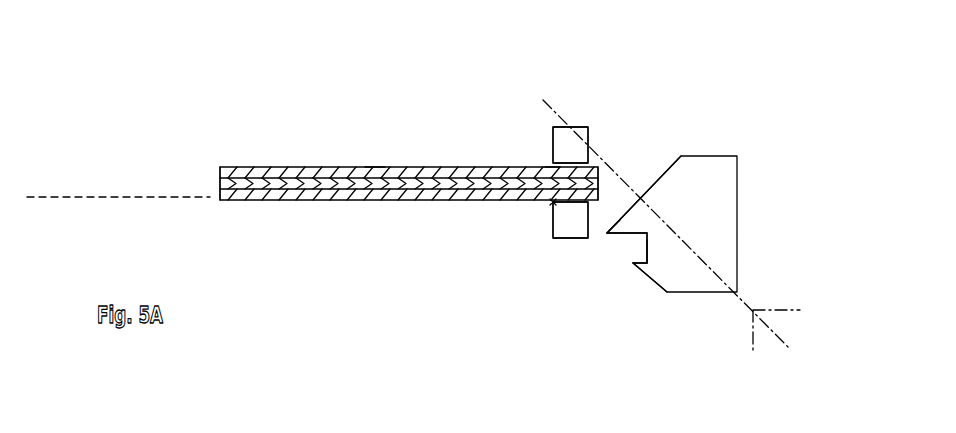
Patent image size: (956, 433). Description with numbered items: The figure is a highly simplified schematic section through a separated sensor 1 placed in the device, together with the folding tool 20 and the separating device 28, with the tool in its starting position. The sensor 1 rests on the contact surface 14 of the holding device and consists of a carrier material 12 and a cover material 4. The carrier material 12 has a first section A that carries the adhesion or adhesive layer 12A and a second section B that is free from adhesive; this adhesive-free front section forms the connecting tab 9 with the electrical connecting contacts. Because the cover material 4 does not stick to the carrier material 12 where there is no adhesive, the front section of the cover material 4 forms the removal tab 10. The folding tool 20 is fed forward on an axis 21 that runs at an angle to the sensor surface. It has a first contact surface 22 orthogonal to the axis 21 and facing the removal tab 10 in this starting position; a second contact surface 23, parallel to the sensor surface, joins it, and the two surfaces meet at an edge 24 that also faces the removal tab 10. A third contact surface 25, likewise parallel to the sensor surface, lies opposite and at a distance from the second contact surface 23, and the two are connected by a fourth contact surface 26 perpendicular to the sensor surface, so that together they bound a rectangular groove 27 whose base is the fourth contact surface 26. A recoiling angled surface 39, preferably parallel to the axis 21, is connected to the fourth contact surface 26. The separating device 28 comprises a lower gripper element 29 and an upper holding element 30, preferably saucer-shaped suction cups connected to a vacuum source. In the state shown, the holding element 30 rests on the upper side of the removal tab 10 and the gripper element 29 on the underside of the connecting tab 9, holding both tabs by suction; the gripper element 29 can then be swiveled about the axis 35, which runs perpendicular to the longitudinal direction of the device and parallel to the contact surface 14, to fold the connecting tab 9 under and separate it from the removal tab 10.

The sensor 1 is at (409, 121).
The cover material 4 is at (427, 172).
The connecting tab 9 is at (597, 203).
The removal tab 10 is at (590, 158).
The carrier material 12 is at (208, 183).
The adhesion or adhesive layer 12A is at (280, 185).
The contact surface 14 is at (70, 190).
The folding tool 20 is at (728, 143).
The axis 21 is at (753, 307).
The first contact surface 22 is at (668, 165).
The second contact surface 23 is at (622, 233).
The edge 24 is at (607, 233).
The third contact surface 25 is at (646, 264).
The fourth contact surface 26 is at (647, 248).
The rectangular groove 27 is at (640, 242).
The device 28 is at (567, 99).
The gripper element 29 is at (565, 232).
The holding element 30 is at (553, 140).
The axis 35 is at (553, 203).
The recoiling angled surface 39 is at (644, 281).
The first section A is at (375, 160).
The second section B is at (553, 167).